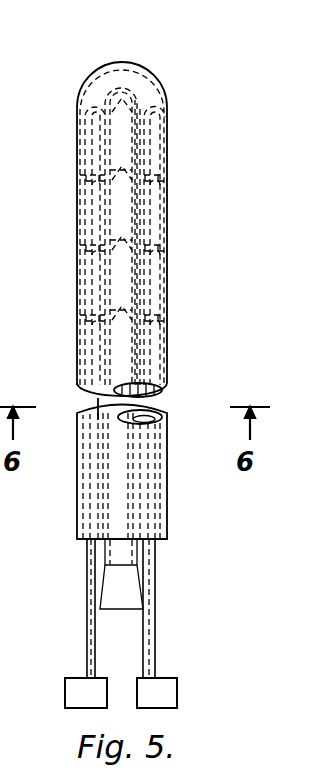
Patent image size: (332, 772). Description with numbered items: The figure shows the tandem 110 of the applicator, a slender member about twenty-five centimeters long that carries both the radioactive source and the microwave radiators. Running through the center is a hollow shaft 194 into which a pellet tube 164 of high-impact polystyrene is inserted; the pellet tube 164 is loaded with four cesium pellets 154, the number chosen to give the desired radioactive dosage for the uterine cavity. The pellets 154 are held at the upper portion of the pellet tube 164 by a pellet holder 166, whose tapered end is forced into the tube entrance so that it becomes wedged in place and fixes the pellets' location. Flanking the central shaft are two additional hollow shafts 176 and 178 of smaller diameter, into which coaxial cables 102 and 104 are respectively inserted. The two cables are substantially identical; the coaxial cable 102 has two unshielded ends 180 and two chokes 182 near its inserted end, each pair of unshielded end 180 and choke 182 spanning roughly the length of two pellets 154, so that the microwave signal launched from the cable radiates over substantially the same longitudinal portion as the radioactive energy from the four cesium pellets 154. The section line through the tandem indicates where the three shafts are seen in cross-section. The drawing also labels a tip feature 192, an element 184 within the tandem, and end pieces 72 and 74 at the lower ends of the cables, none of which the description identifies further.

The tandem 110 is at (248, 141).
The hollow shaft 176 is at (168, 102).
The hollow shaft 178 is at (88, 84).
The dome tip 192 is at (104, 78).
The hollow shaft 194 is at (127, 90).
The Cesium-137 pellets 154 is at (143, 107).
The unshielded end 180 is at (166, 158).
The choke 182 is at (168, 220).
The discs 184 is at (168, 248).
The pellet tube 164 is at (138, 552).
The pellet holder 166 is at (140, 588).
The coaxial cable 104 is at (87, 618).
The coaxial cable 102 is at (157, 612).
The left connector 74 is at (65, 690).
The right connector 72 is at (177, 690).